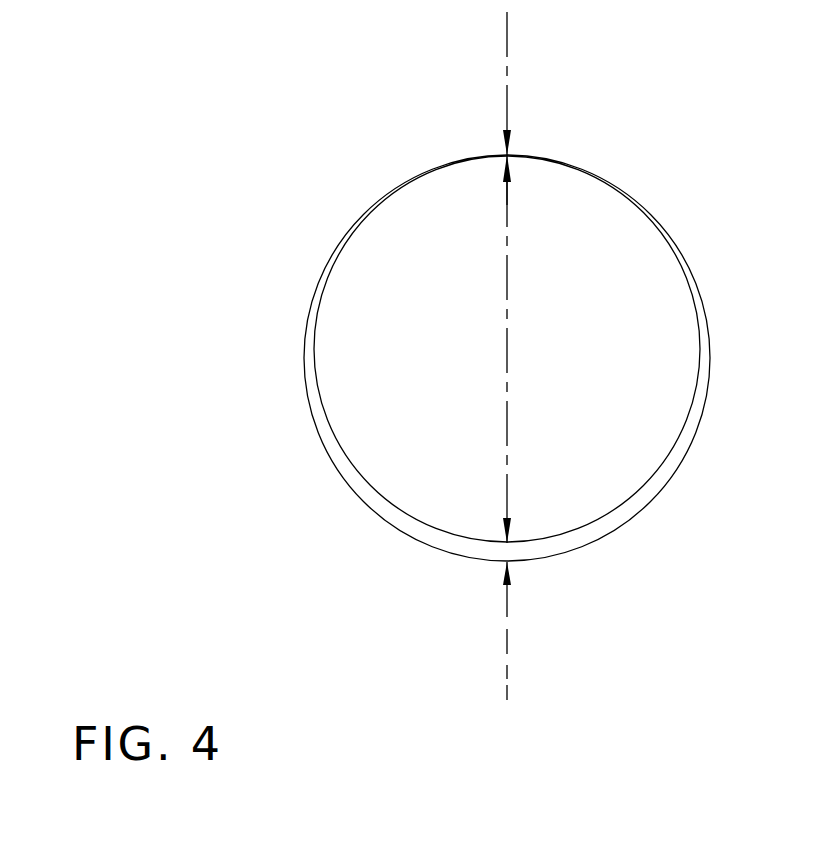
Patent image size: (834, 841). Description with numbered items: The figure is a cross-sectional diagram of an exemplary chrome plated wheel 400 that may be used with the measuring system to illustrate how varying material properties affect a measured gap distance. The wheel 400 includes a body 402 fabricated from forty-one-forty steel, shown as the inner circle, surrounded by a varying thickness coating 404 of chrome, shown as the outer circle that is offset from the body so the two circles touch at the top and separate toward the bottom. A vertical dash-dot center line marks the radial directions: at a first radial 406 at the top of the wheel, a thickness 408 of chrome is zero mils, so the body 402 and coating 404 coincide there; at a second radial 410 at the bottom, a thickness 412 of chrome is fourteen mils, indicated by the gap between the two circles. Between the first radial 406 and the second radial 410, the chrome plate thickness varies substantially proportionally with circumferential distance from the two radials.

The chrome plated wheel 400 is at (165, 69).
The body 402 is at (657, 332).
The varying thickness coating 404 is at (652, 505).
The first radial 406 is at (505, 78).
The thickness 408 is at (508, 117).
The second radial 410 is at (503, 633).
The thickness 412 is at (507, 597).